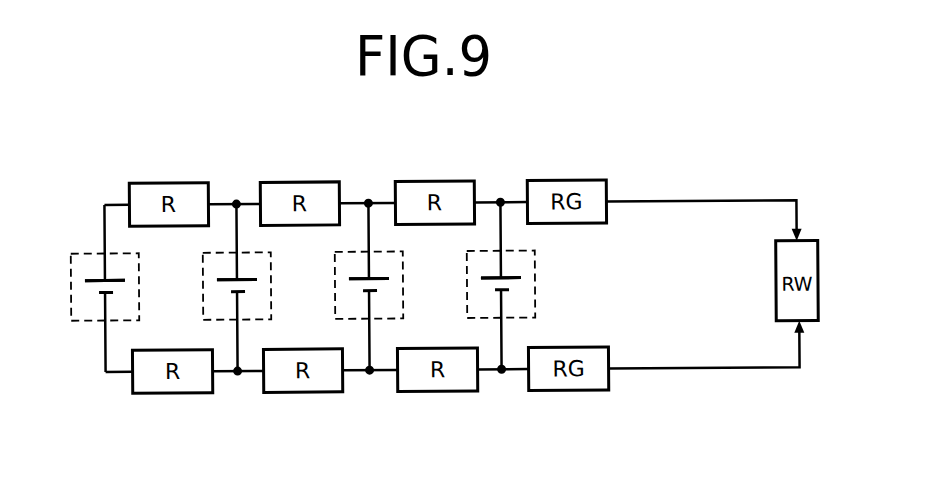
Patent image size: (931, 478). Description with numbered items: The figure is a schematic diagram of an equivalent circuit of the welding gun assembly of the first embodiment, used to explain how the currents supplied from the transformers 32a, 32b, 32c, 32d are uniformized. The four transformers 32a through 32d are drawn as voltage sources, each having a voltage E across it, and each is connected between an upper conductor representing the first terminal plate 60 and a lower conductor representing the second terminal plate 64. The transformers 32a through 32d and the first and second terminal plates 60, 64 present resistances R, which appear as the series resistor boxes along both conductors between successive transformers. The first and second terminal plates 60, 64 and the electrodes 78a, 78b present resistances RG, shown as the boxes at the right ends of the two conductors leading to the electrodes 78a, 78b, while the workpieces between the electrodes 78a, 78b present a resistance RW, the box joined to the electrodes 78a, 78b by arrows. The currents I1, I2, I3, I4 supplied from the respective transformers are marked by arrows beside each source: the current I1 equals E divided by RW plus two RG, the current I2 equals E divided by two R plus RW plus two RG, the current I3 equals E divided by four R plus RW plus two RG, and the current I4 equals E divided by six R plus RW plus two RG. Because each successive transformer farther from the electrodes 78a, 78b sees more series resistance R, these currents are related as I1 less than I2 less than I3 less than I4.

The transformer 32a is at (466, 273).
The transformer 32b is at (334, 273).
The transformer 32c is at (202, 273).
The transformer 32d is at (70, 273).
The first terminal plate 60 is at (485, 201).
The second terminal plate 64 is at (362, 374).
The electrode 78a is at (797, 217).
The electrode 78b is at (800, 348).
The voltage E is at (100, 291).
The current I1 is at (510, 211).
The current I2 is at (378, 211).
The current I3 is at (246, 211).
The current I4 is at (114, 211).